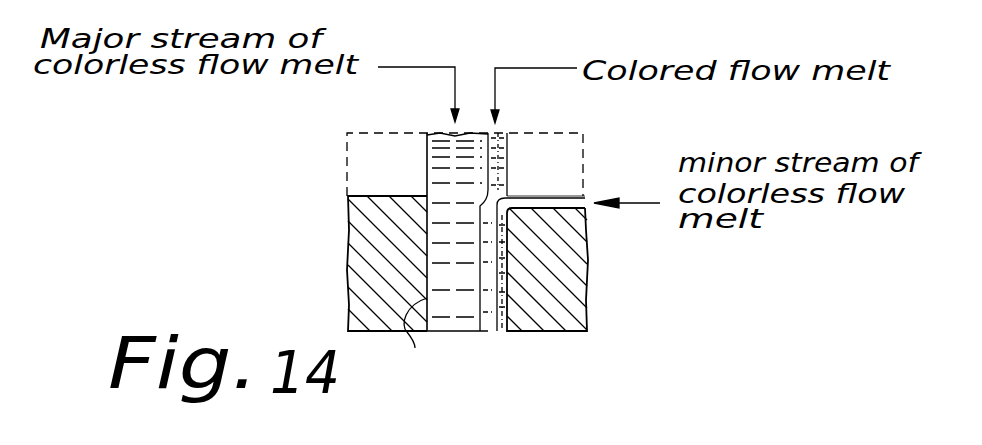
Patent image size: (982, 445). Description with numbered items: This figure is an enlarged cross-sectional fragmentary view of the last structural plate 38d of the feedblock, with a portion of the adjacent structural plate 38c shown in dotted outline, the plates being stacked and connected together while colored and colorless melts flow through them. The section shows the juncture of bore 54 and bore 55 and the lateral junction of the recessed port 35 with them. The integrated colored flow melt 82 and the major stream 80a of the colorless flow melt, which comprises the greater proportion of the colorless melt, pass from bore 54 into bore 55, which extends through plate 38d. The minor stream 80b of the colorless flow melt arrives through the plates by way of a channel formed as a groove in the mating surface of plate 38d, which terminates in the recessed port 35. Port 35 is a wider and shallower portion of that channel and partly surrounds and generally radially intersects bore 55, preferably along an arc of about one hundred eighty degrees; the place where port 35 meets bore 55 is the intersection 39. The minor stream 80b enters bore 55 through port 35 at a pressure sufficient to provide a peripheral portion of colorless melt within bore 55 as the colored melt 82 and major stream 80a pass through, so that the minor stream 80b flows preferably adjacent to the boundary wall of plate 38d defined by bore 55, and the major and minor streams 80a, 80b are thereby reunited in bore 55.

The bore 54 is at (426, 162).
The major stream 80a is at (450, 145).
The colored flow melt 82 is at (500, 135).
The structural plate 38c is at (347, 170).
The intersection 39 is at (512, 206).
The recessed port 35 is at (563, 197).
The structural plate 38d is at (365, 264).
The minor stream 80b is at (585, 208).
The bore 55 is at (412, 345).